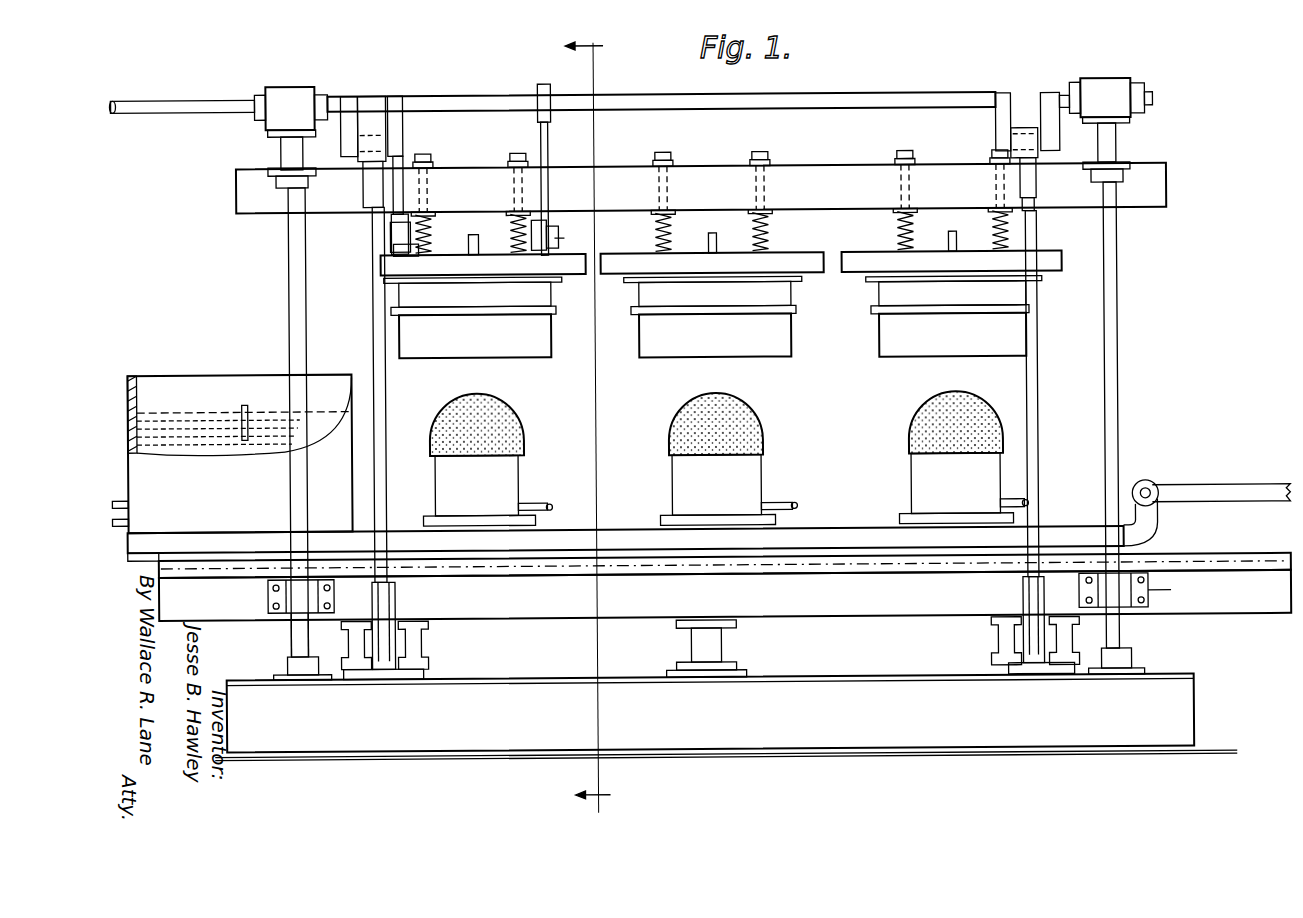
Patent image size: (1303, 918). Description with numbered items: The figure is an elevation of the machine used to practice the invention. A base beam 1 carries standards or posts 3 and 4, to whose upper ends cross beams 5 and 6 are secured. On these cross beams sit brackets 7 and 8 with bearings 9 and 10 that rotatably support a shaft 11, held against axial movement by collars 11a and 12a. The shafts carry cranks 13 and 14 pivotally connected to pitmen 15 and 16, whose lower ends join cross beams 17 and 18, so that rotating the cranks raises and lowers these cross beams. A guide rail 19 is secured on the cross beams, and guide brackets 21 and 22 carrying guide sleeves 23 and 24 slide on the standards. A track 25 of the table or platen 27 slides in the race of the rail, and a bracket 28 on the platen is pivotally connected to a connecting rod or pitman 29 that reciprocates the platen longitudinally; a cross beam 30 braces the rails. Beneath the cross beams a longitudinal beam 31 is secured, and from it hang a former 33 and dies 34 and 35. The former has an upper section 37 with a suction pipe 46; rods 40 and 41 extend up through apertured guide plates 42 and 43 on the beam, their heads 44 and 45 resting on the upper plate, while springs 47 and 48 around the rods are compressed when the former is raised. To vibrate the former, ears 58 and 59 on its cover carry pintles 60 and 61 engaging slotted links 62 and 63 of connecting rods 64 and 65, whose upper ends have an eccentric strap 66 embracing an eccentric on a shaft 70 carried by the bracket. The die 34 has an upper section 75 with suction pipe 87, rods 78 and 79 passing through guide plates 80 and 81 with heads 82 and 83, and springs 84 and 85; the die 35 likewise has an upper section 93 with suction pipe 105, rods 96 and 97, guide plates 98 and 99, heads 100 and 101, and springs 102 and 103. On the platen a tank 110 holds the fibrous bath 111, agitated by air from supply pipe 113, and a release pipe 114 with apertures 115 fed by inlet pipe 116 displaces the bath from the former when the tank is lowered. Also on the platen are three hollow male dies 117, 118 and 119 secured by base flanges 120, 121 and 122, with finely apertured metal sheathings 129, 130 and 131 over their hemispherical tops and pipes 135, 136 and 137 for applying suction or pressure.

The base beam 1 is at (735, 725).
The standard 3 is at (1118, 354).
The standard 4 is at (290, 313).
The cross beam 5 is at (1132, 144).
The cross beam 6 is at (280, 156).
The bracket 7 is at (285, 95).
The bracket 8 is at (1102, 92).
The bearing 9 is at (1128, 92).
The bearing 10 is at (308, 94).
The shaft 11 is at (810, 97).
The collar 11a is at (262, 118).
The collar 12a is at (352, 96).
The crank 13 is at (1008, 102).
The crank 14 is at (378, 110).
The pitman 15 is at (1027, 386).
The pitman 16 is at (386, 398).
The cross beam 17 is at (1005, 645).
The cross beam 18 is at (405, 656).
The guide rail 19 is at (715, 601).
The guide bracket 21 is at (1178, 590).
The guide bracket 22 is at (296, 598).
The guide sleeve 23 is at (1148, 586).
The guide sleeve 24 is at (290, 596).
The track 25 is at (146, 562).
The platen 27 is at (828, 560).
The bracket 28 is at (1078, 530).
The connecting rod 29 is at (1228, 490).
The cross beam 30 is at (735, 641).
The longitudinal beam 31 is at (830, 172).
The former 33 is at (475, 336).
The die 34 is at (715, 335).
The die 35 is at (952, 335).
The upper section 37 is at (545, 293).
The rod 40 is at (483, 265).
The rod 41 is at (544, 256).
The guide plate 42 is at (512, 228).
The guide plate 43 is at (514, 162).
The head 44 is at (428, 155).
The head 45 is at (522, 155).
The suction pipe 46 is at (470, 250).
The spring 47 is at (425, 256).
The spring 48 is at (520, 256).
The ear 58 is at (400, 256).
The ear 59 is at (548, 230).
The pintle 60 is at (392, 238).
The pintle 61 is at (560, 234).
The link 62 is at (398, 222).
The link 63 is at (573, 242).
The connecting rod 64 is at (398, 191).
The connecting rod 65 is at (543, 189).
The eccentric strap 66 is at (546, 88).
The shaft 70 is at (125, 101).
The upper section 75 is at (778, 292).
The rod 78 is at (668, 256).
The rod 79 is at (762, 256).
The guide plate 80 is at (674, 218).
The guide plate 81 is at (752, 162).
The head 82 is at (666, 155).
The head 83 is at (763, 155).
The spring 84 is at (657, 230).
The spring 85 is at (754, 234).
The suction pipe 87 is at (714, 236).
The upper section 93 is at (1010, 293).
The rod 96 is at (900, 225).
The rod 97 is at (1012, 230).
The guide plate 98 is at (994, 220).
The guide plate 99 is at (992, 164).
The head 100 is at (908, 155).
The head 101 is at (996, 158).
The spring 102 is at (952, 260).
The spring 103 is at (1002, 256).
The suction pipe 105 is at (960, 262).
The tank 110 is at (344, 376).
The fibrous bath 111 is at (170, 410).
The air supply pipe 113 is at (128, 503).
The release pipe 114 is at (248, 440).
The aperture 115 is at (243, 406).
The inlet pipe 116 is at (128, 522).
The male die 117 is at (476, 485).
The male die 118 is at (716, 485).
The male die 119 is at (955, 483).
The base flange 120 is at (423, 525).
The base flange 121 is at (660, 525).
The base flange 122 is at (899, 525).
The metal sheathing 129 is at (518, 426).
The metal sheathing 130 is at (762, 426).
The metal sheathing 131 is at (910, 440).
The pipe 135 is at (556, 497).
The pipe 136 is at (792, 506).
The pipe 137 is at (1020, 500).